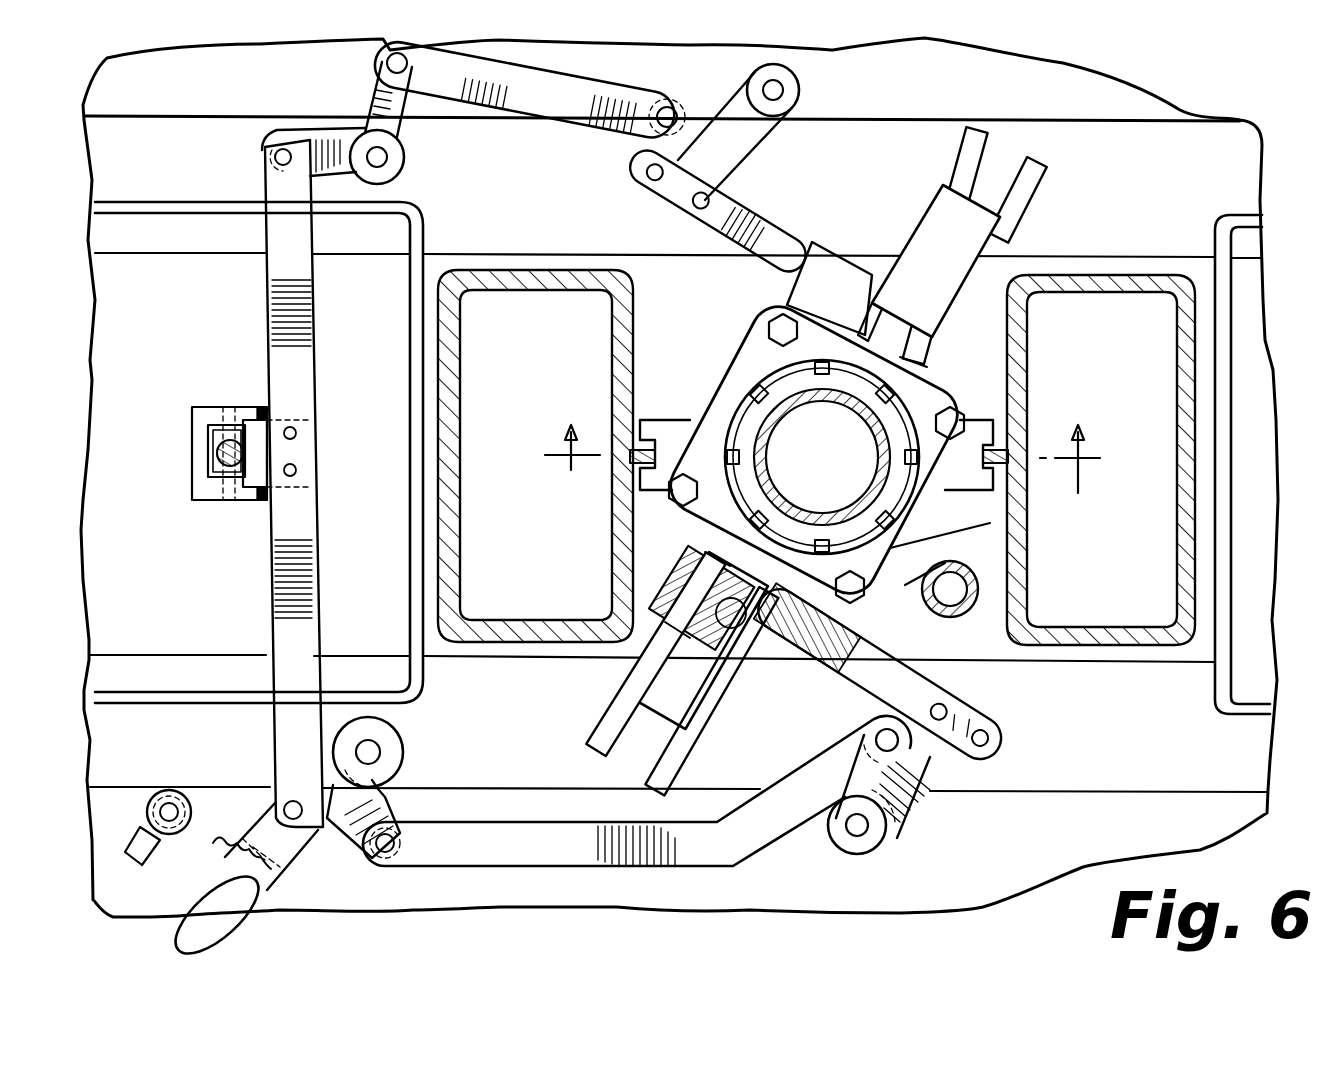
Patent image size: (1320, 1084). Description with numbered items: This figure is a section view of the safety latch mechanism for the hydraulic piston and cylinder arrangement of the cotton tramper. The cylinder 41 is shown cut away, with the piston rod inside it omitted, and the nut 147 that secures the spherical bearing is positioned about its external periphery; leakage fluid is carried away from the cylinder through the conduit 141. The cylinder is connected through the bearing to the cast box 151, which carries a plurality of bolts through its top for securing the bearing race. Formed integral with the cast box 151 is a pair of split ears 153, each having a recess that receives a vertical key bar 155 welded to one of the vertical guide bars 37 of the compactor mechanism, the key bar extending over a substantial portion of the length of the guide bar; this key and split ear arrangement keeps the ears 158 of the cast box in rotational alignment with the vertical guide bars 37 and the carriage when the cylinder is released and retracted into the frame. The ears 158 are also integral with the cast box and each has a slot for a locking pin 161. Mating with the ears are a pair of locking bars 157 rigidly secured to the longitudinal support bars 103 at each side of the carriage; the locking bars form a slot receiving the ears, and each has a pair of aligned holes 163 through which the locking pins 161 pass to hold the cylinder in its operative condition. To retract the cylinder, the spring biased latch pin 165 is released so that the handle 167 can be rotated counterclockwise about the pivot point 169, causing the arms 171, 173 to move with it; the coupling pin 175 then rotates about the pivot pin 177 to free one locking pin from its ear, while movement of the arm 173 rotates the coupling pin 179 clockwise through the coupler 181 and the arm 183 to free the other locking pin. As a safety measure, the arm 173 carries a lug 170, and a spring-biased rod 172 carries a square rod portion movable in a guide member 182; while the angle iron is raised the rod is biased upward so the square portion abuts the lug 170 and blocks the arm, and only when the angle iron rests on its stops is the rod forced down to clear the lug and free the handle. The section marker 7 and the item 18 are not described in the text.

The longitudinal support bars 103 is at (910, 122).
The vertical guide bars 37 is at (460, 445).
The section line 7 is at (822, 474).
The cylinder 41 is at (790, 410).
The nut 147 is at (822, 548).
The cast box 151 is at (928, 556).
The conduit 141 is at (942, 612).
The split ears 153 is at (658, 430).
The key bar 155 is at (634, 448).
The locking bars 157 is at (1010, 215).
The ears 158 is at (925, 352).
The locking pin 161 is at (868, 262).
The holes 163 is at (722, 625).
The spring biased latch pin 165 is at (130, 840).
The handle 167 is at (235, 930).
The pivot point 169 is at (385, 755).
The arm 171 is at (562, 860).
The arm 173 is at (268, 628).
The coupling pin 175 is at (908, 810).
The pivot pin 177 is at (868, 855).
The coupling pin 179 is at (715, 112).
The coupler 181 is at (322, 135).
The arm 183 is at (480, 84).
The guide member 182 is at (195, 408).
The lug 170 is at (255, 408).
The rod 172 is at (218, 458).
The slot 18 is at (205, 475).